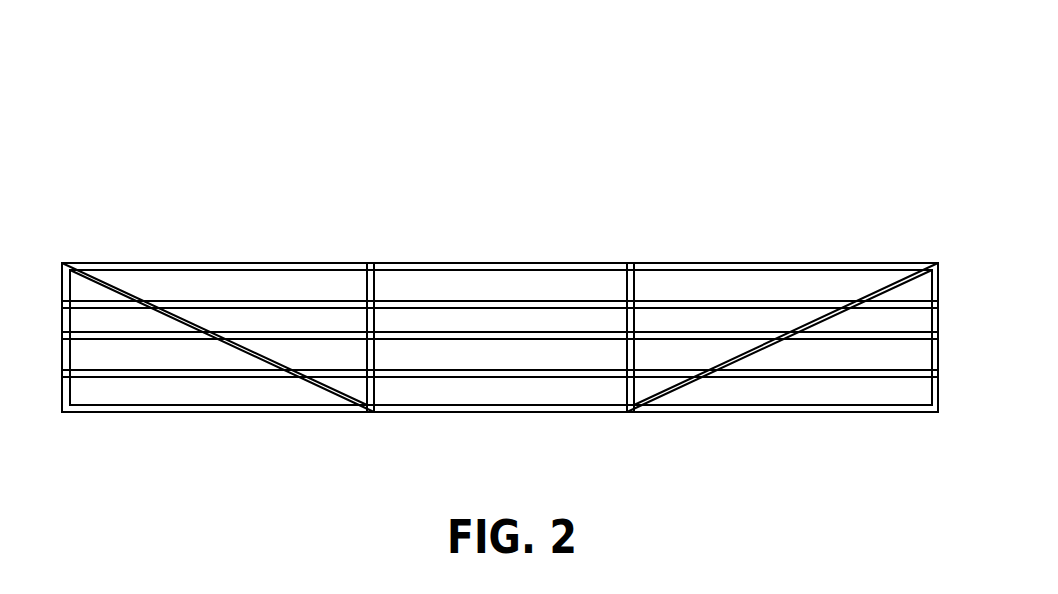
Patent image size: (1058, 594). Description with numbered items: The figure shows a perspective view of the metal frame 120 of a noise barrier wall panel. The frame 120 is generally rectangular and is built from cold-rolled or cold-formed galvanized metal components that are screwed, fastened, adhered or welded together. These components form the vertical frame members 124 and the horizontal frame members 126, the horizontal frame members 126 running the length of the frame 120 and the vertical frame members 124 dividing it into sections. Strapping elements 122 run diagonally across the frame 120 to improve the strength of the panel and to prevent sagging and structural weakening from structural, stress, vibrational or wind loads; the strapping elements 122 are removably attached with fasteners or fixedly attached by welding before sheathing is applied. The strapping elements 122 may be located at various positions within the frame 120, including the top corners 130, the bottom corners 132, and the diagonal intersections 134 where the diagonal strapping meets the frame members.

The metal frame 120 is at (502, 164).
The strapping elements 122 is at (252, 350).
The vertical frame members 124 is at (630, 290).
The horizontal frame members 126 is at (568, 262).
The top corners 130 is at (63, 242).
The bottom corners 132 is at (62, 430).
The diagonal intersections 134 is at (598, 419).